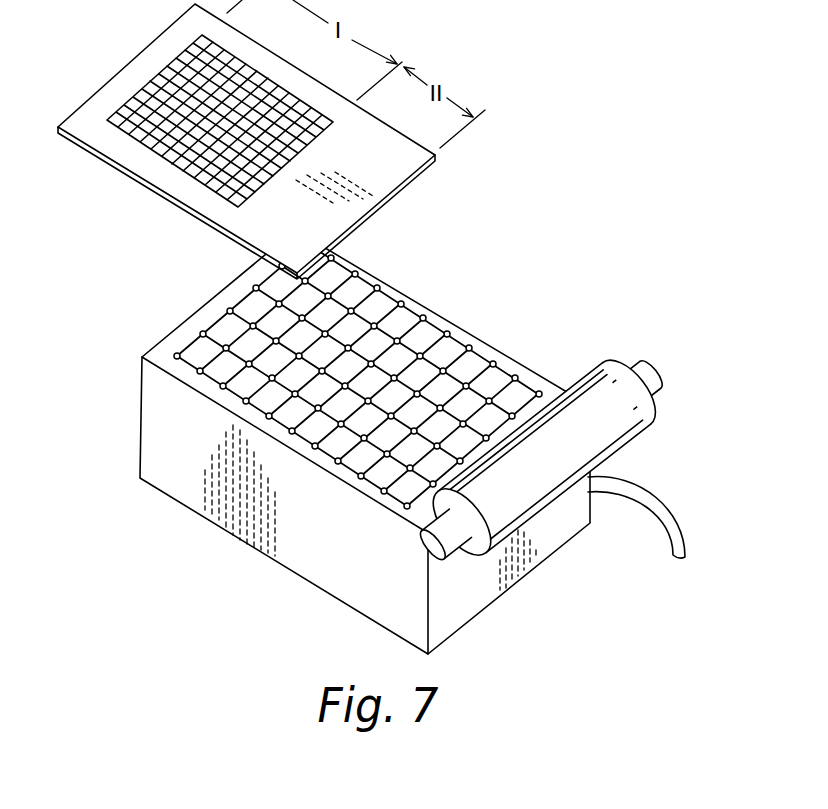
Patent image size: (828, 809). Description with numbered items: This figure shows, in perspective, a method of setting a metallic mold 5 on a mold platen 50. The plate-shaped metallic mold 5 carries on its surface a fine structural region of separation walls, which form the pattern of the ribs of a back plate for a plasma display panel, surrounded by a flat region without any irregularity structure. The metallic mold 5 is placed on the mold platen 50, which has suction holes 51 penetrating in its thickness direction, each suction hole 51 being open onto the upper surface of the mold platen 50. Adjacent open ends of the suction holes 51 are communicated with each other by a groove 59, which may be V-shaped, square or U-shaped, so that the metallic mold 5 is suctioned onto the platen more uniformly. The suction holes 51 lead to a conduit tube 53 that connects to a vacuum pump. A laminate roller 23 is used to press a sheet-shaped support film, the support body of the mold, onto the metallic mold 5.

The metallic mold 5 is at (132, 155).
The mold platen 50 is at (158, 447).
The suction holes 51 is at (462, 328).
The groove 59 is at (392, 297).
The laminate roller 23 is at (585, 398).
The conduit tube 53 is at (667, 503).